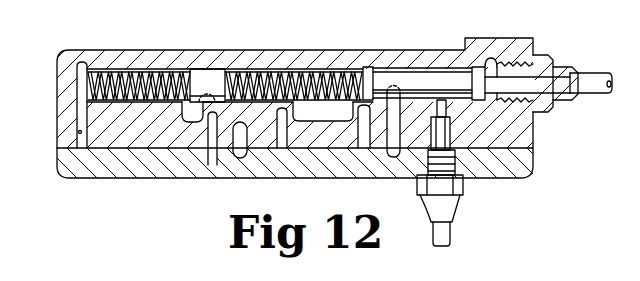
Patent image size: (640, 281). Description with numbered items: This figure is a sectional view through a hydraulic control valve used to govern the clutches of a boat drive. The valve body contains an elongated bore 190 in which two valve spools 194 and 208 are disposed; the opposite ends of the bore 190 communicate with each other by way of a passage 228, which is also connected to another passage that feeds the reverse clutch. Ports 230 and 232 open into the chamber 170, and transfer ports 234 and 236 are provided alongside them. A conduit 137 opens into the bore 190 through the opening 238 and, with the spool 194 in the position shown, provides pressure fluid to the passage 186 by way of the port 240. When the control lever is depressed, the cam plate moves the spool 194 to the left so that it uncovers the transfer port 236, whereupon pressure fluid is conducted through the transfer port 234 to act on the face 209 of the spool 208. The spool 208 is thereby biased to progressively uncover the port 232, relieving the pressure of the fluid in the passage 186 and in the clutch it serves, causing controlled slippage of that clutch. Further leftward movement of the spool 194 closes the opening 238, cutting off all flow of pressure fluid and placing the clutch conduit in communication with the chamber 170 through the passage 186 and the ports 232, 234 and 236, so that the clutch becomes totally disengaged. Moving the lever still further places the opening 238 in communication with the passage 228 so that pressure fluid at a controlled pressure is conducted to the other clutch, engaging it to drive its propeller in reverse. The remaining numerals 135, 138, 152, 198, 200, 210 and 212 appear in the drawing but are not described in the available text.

The valve unit 135 is at (115, 6).
The conduit 137 is at (448, 240).
The valve assembly 138 is at (78, 189).
The housing 152 is at (296, 52).
The chamber 170 is at (217, 178).
The passage 186 is at (403, 178).
The bore 190 is at (348, 77).
The spool 194 is at (455, 85).
The tube 198 is at (606, 57).
The nut 200 is at (548, 111).
The spool 208 is at (207, 77).
The face 209 is at (240, 75).
The spring 210 is at (107, 69).
The spring 212 is at (320, 77).
The passage 228 is at (80, 132).
The port 230 is at (192, 140).
The port 232 is at (203, 130).
The transfer port 234 is at (270, 140).
The transfer port 236 is at (330, 140).
The opening 238 is at (453, 123).
The port 240 is at (400, 95).